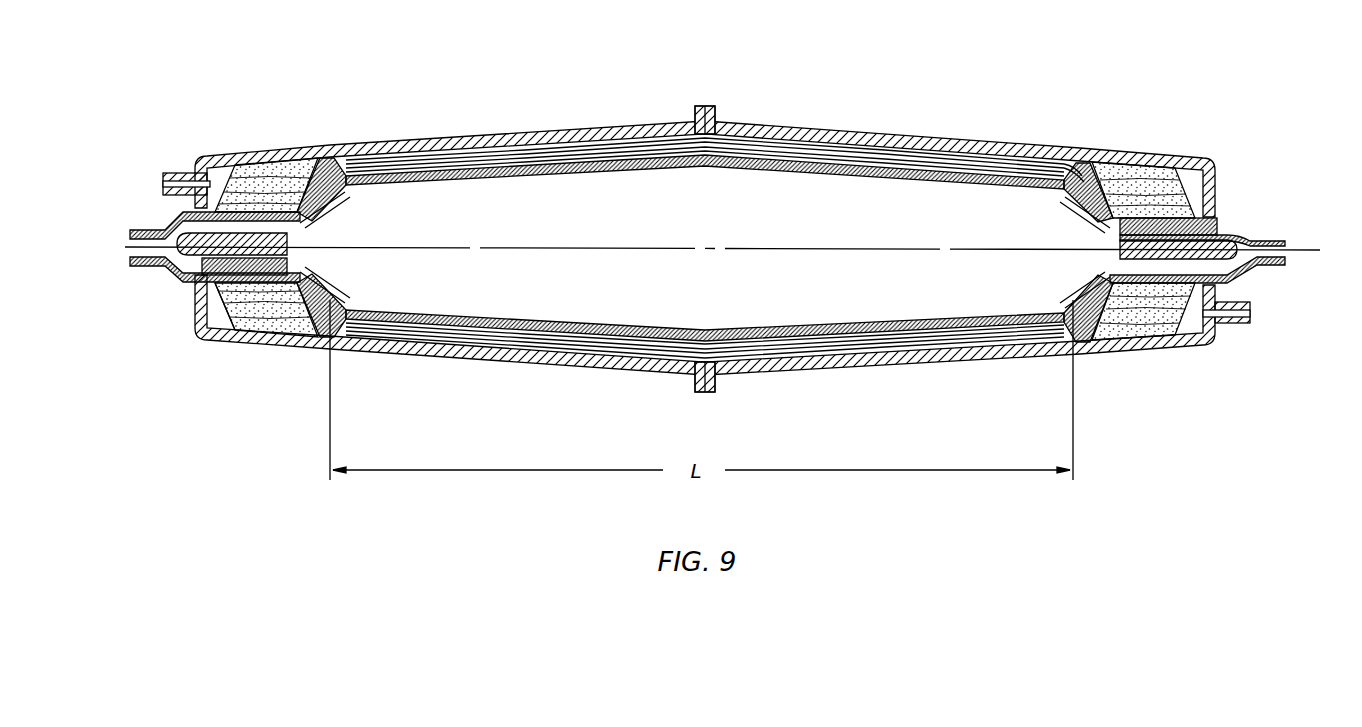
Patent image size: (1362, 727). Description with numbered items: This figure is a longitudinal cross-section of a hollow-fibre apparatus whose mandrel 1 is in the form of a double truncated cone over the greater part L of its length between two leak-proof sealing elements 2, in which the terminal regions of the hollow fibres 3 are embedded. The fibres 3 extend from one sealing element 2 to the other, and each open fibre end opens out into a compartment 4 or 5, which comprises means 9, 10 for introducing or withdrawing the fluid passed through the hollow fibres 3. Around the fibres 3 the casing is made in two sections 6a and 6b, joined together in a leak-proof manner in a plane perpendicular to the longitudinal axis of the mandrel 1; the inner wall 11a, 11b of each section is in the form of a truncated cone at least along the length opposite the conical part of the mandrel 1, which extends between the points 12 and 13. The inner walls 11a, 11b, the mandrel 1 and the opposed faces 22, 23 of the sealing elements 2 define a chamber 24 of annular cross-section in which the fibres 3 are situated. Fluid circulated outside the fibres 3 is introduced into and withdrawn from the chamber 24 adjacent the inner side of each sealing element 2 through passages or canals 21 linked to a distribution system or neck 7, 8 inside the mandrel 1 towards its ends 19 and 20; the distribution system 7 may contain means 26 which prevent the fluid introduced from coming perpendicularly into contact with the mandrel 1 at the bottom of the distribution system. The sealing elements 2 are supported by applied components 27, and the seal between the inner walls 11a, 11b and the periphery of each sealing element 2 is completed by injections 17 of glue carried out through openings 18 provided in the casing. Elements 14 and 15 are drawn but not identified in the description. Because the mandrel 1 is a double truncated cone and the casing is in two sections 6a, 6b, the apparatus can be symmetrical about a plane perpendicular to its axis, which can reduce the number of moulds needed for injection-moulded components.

The mandrel 1 is at (1002, 322).
The sealing element 2 is at (253, 318).
The hollow fibres 3 is at (563, 160).
The compartment 4 is at (1185, 322).
The compartment 5 is at (222, 315).
The casing section 6a is at (387, 353).
The casing section 6b is at (917, 353).
The distribution system or neck 7 is at (128, 232).
The distribution system or neck 8 is at (1267, 265).
The fluid introduction or withdrawal means 9 is at (1247, 313).
The fluid introduction or withdrawal means 10 is at (168, 185).
The inner wall of casing section 11a is at (483, 345).
The inner wall of casing section 11b is at (818, 358).
The end of truncated-cone part L 12 is at (330, 318).
The end of truncated-cone part L 13 is at (1053, 175).
The boundary surface 14 is at (307, 302).
The neck portion 15 is at (1087, 190).
The glue injection 17 is at (262, 160).
The opening 18 is at (287, 160).
The mandrel end 19 is at (223, 245).
The mandrel end 20 is at (1218, 238).
The passages or canals 21 is at (300, 235).
The face of sealing element 22 is at (310, 198).
The face of sealing element 23 is at (1120, 203).
The chamber 24 is at (438, 157).
The fluid deflecting means 26 is at (173, 258).
The applied component 27 is at (175, 277).